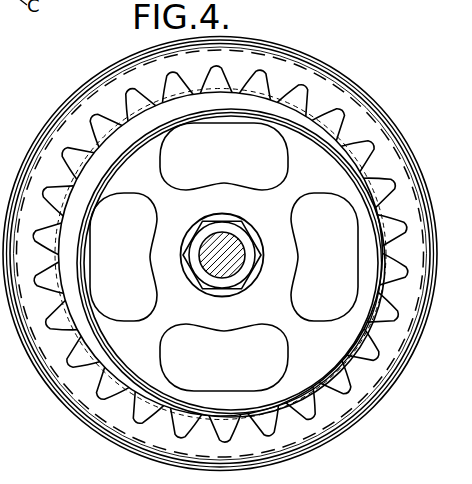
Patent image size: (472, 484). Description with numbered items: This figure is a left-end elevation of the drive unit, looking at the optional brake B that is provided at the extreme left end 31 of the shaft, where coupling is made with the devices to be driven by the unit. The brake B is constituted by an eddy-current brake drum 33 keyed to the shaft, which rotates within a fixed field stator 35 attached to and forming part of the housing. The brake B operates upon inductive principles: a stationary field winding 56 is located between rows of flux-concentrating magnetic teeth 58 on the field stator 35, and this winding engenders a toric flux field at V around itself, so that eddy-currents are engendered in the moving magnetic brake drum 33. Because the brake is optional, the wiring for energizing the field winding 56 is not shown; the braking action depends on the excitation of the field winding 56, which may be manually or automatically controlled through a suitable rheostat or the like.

The extreme left end of the shaft 31 is at (233, 267).
The eddy-current brake drum 33 is at (221, 109).
The field stator 35 is at (364, 124).
The stationary field winding 56 is at (72, 116).
The flux-concentrating magnetic teeth 58 is at (218, 70).
The brake B is at (355, 77).
The toric flux field V is at (413, 155).